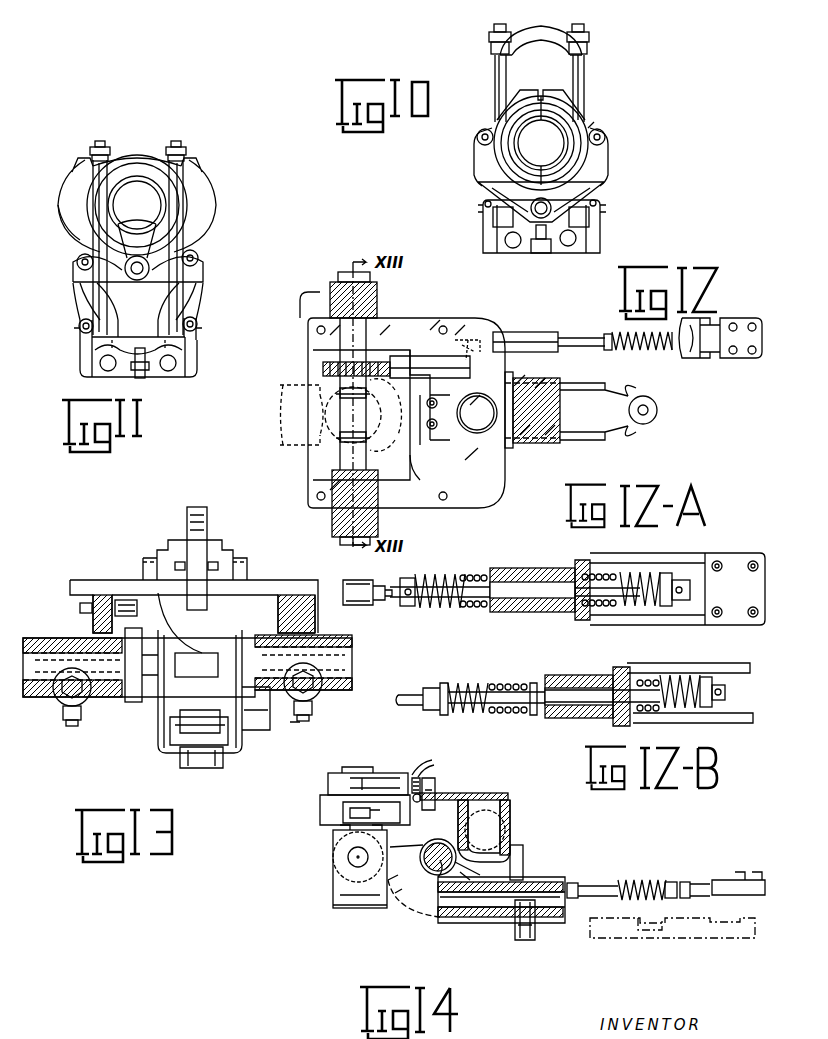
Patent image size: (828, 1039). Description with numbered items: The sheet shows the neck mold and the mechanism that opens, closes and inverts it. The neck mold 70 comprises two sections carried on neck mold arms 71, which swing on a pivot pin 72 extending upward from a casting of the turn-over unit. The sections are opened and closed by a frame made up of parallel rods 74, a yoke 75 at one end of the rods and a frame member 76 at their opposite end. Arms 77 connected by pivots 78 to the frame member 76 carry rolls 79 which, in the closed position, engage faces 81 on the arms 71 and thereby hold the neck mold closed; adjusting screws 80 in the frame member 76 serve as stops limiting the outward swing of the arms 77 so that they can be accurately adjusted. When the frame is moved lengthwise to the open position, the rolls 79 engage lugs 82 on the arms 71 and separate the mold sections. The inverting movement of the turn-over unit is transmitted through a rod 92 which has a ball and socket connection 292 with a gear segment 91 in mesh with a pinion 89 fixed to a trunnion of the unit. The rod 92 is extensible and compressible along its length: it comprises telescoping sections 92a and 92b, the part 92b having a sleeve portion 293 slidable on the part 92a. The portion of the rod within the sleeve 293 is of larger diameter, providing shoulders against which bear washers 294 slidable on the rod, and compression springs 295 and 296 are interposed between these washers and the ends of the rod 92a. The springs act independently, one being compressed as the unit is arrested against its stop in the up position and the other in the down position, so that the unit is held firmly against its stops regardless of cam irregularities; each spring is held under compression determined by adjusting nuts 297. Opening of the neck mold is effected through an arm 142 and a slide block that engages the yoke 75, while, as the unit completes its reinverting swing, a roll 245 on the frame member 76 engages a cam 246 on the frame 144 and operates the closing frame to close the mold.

In FIG. 10, the neck mold 70 is at (568, 98).
In FIG. 11, the neck mold 70 is at (188, 194).
In FIG. 11, the neck mold arms 71 is at (72, 245).
In FIG. 11, the pivot pin 72 is at (137, 282).
In FIG. 10, the parallel rods 74 is at (588, 70).
In FIG. 10, the yoke 75 is at (556, 30).
In FIG. 10, the frame member 76 is at (551, 248).
In FIG. 11, the frame member 76 is at (153, 368).
In FIG. 10, the arms 77 is at (478, 160).
In FIG. 11, the arms 77 is at (193, 298).
In FIG. 10, the pivots 78 is at (520, 248).
In FIG. 11, the pivots 78 is at (177, 370).
In FIG. 11, the rolls 79 is at (196, 259).
In FIG. 10, the adjusting screws 80 is at (483, 214).
In FIG. 11, the adjusting screws 80 is at (198, 332).
In FIG. 10, the faces 81 is at (592, 142).
In FIG. 11, the faces 81 is at (200, 228).
In FIG. 11, the lugs 82 is at (198, 275).
In FIG. 12, the pinion 89 is at (325, 366).
In FIG. 14, the pinion 89 is at (333, 866).
In FIG. 12, the gear segment 91 is at (405, 365).
In FIG. 14, the gear segment 91 is at (397, 900).
In FIG. 12, the rod 92 is at (570, 335).
In FIG. 14, the rod 92 is at (590, 888).
In FIG. 12A, the telescoping section 92a is at (482, 575).
In FIG. 12A, the telescoping section 92b is at (648, 562).
In FIG. 12, the arm 142 is at (616, 420).
In FIG. 12, the frame 144 is at (500, 462).
In FIG. 11, the roll 245 is at (140, 378).
In FIG. 12, the cam 246 is at (420, 420).
In FIG. 13, the cam 246 is at (210, 524).
In FIG. 12, the ball and socket connection 292 is at (494, 335).
In FIG. 12A, the sleeve portion 293 is at (540, 614).
In FIG. 12A, the washers 294 is at (490, 610).
In FIG. 12B, the washers 294 is at (532, 714).
In FIG. 12A, the compression spring 295 is at (462, 608).
In FIG. 12B, the compression spring 295 is at (485, 714).
In FIG. 12A, the compression spring 296 is at (648, 608).
In FIG. 12B, the compression spring 296 is at (692, 676).
In FIG. 12A, the adjusting nuts 297 is at (412, 578).